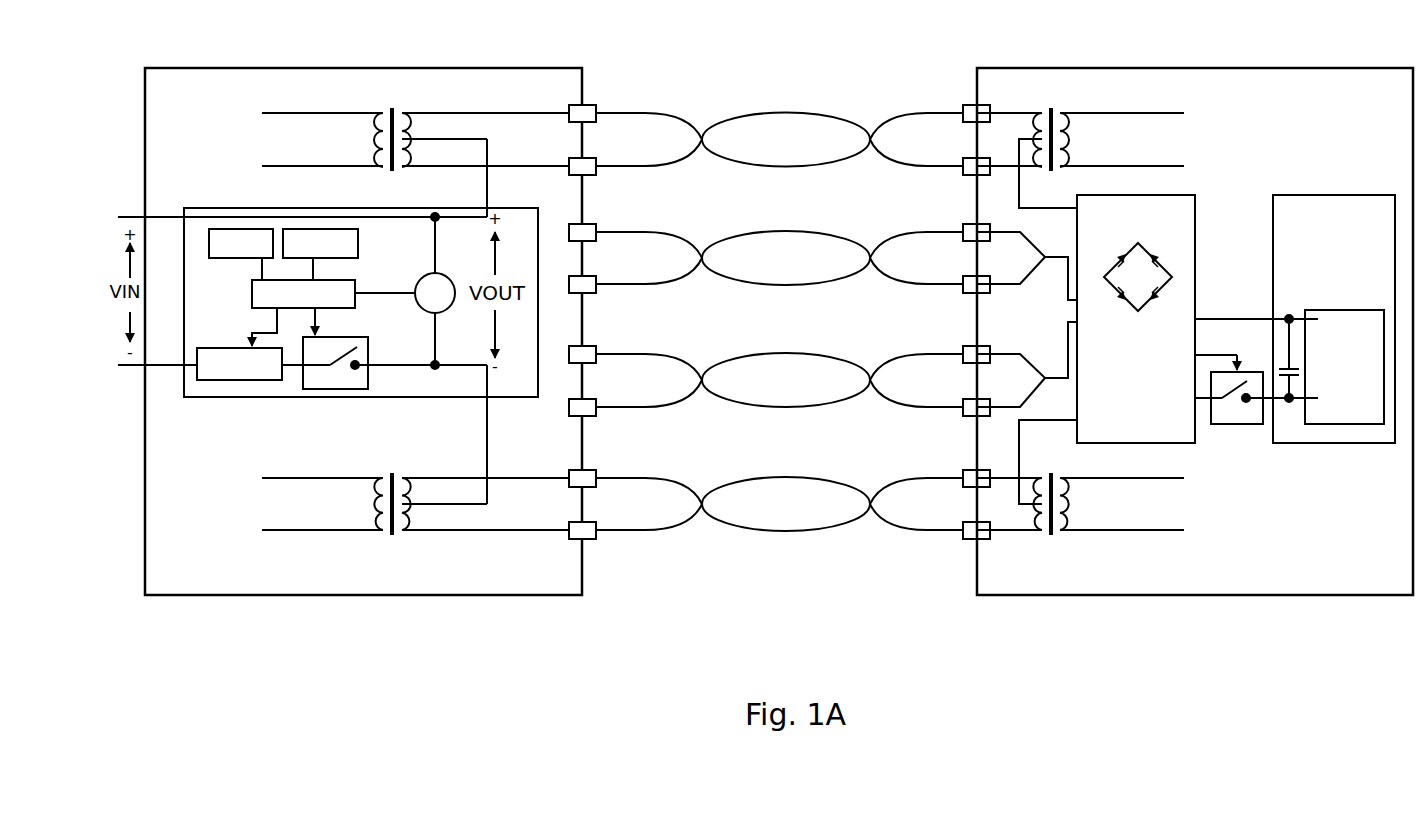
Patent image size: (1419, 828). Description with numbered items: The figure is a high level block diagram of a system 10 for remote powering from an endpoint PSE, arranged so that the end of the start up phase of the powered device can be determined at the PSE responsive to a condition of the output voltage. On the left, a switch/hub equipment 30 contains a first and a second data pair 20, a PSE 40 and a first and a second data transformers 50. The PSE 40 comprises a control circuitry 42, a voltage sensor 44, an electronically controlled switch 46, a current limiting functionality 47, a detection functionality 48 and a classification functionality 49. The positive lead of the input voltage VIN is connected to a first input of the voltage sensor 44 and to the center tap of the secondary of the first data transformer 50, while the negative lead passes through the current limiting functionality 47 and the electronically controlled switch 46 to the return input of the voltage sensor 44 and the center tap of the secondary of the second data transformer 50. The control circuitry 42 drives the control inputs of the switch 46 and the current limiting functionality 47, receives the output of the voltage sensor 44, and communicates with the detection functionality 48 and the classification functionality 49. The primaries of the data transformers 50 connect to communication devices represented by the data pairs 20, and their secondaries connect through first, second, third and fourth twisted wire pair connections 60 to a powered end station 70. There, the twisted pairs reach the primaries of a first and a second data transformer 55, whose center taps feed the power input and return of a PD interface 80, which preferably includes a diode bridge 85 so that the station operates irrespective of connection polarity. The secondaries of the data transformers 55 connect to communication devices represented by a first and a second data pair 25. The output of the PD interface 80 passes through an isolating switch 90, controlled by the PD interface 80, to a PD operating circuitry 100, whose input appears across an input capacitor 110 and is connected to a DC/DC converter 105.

The system 10 is at (740, 69).
The data pair 20 is at (335, 166).
The data pair 25 is at (1142, 113).
The switch/hub equipment 30 is at (365, 595).
The PSE 40 is at (361, 313).
The control circuitry 42 is at (252, 293).
The voltage sensor 44 is at (420, 277).
The electronically controlled switch 46 is at (330, 389).
The current limiting functionality 47 is at (245, 380).
The detection functionality 48 is at (240, 229).
The classification functionality 49 is at (325, 229).
The data transformer 50 is at (393, 171).
The data transformer 55 is at (1051, 108).
The twisted wire pair connection 60 is at (785, 167).
The powered end station 70 is at (1133, 595).
The PD interface 80 is at (1163, 311).
The diode bridge 85 is at (1170, 283).
The isolating switch 90 is at (1237, 424).
The PD operating circuitry 100 is at (1334, 316).
The DC/DC converter 105 is at (1345, 424).
The input capacitor 110 is at (1277, 371).